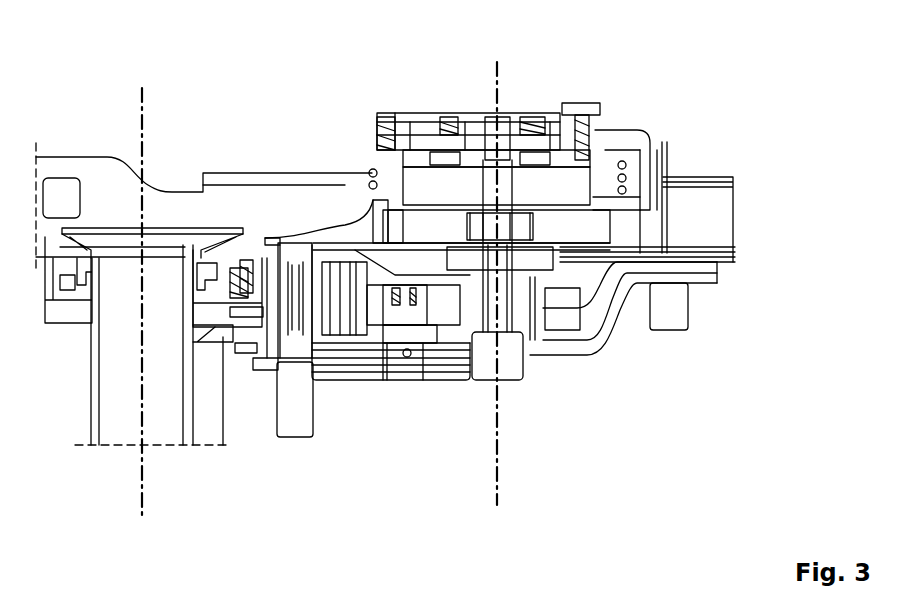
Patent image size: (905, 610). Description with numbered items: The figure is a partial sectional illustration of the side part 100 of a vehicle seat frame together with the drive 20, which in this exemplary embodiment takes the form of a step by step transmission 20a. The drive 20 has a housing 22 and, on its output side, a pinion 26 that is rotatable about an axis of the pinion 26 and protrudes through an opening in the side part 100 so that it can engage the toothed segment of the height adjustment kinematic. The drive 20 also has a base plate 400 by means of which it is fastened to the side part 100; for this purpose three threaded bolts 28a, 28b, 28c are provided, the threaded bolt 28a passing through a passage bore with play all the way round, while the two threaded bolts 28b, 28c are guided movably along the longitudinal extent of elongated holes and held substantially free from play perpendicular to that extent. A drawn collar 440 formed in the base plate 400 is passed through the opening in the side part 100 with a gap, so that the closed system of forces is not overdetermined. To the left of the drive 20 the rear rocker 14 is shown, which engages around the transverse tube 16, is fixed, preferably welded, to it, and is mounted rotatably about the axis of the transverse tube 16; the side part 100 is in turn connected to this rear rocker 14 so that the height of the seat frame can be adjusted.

The rear rocker 14 is at (232, 315).
The transverse tube 16 is at (176, 277).
The drive 20 is at (542, 147).
The step by step transmission 20a is at (542, 147).
The housing 22 is at (427, 150).
The pinion 26 is at (522, 313).
The threaded bolt 28a is at (674, 315).
The threaded bolt 28b is at (703, 362).
The threaded bolt 28c is at (298, 402).
The side part 100 is at (725, 257).
The base plate 400 is at (363, 243).
The drawn collar 440 is at (443, 267).